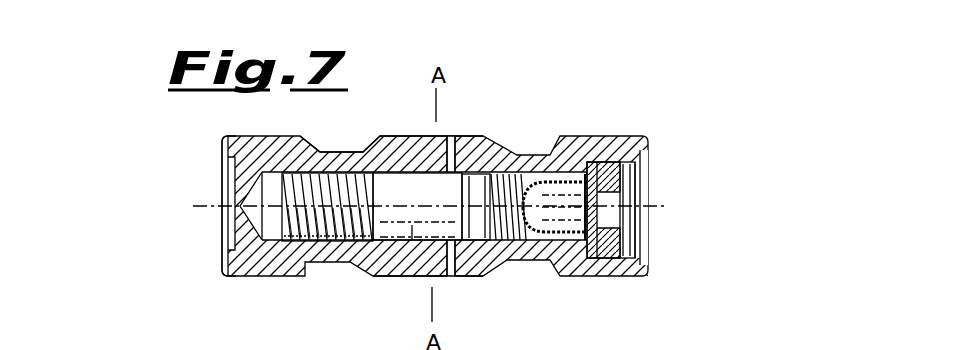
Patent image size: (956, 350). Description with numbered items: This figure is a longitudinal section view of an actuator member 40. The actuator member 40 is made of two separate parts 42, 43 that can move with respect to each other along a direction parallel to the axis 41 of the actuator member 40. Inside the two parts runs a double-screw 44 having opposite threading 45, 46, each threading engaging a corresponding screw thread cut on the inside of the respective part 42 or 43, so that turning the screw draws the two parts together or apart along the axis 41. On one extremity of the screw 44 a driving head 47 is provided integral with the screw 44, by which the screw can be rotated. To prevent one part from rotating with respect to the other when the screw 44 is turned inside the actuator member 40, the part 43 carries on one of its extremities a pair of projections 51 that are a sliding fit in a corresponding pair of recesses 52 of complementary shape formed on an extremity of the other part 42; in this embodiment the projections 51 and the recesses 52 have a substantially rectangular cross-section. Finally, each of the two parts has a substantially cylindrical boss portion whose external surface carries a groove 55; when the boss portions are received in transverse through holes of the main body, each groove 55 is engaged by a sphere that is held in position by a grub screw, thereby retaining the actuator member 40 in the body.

The actuator member 40 is at (214, 254).
The axis 41 is at (200, 206).
The part 42 is at (543, 140).
The part 43 is at (338, 140).
The double-screw 44 is at (430, 262).
The threading 45 is at (305, 243).
The threading 46 is at (527, 245).
The driving head 47 is at (643, 204).
The projections 51 is at (428, 140).
The recesses 52 is at (452, 138).
The groove 55 is at (283, 136).